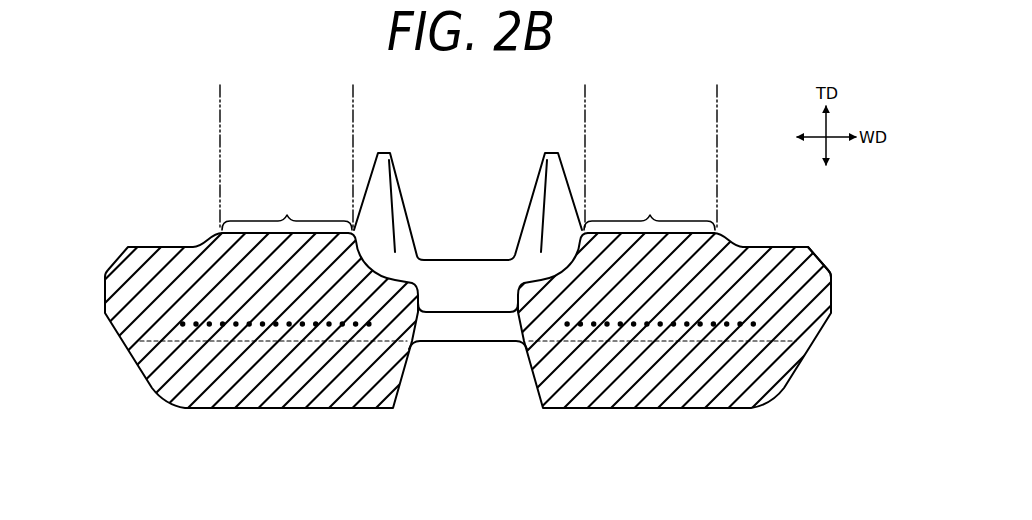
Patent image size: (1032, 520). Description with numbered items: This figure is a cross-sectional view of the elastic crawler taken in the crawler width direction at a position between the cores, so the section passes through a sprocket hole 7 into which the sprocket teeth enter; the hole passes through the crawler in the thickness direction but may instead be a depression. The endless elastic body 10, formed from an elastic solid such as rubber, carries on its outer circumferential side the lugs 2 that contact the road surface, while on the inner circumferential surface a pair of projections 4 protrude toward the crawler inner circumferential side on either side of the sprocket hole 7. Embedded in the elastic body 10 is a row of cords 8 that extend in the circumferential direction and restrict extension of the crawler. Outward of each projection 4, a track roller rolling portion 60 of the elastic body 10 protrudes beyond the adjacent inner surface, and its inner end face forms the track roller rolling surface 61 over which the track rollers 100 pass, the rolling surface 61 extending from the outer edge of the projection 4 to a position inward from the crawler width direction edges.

The lug 2 is at (273, 403).
The projection 4 is at (378, 193).
The sprocket hole 7 is at (465, 300).
The cord 8 is at (180, 324).
The elastic body 10 is at (749, 248).
The track roller rolling portion 60 is at (252, 243).
The track roller rolling surface 61 is at (468, 208).
The track roller 100 is at (218, 131).